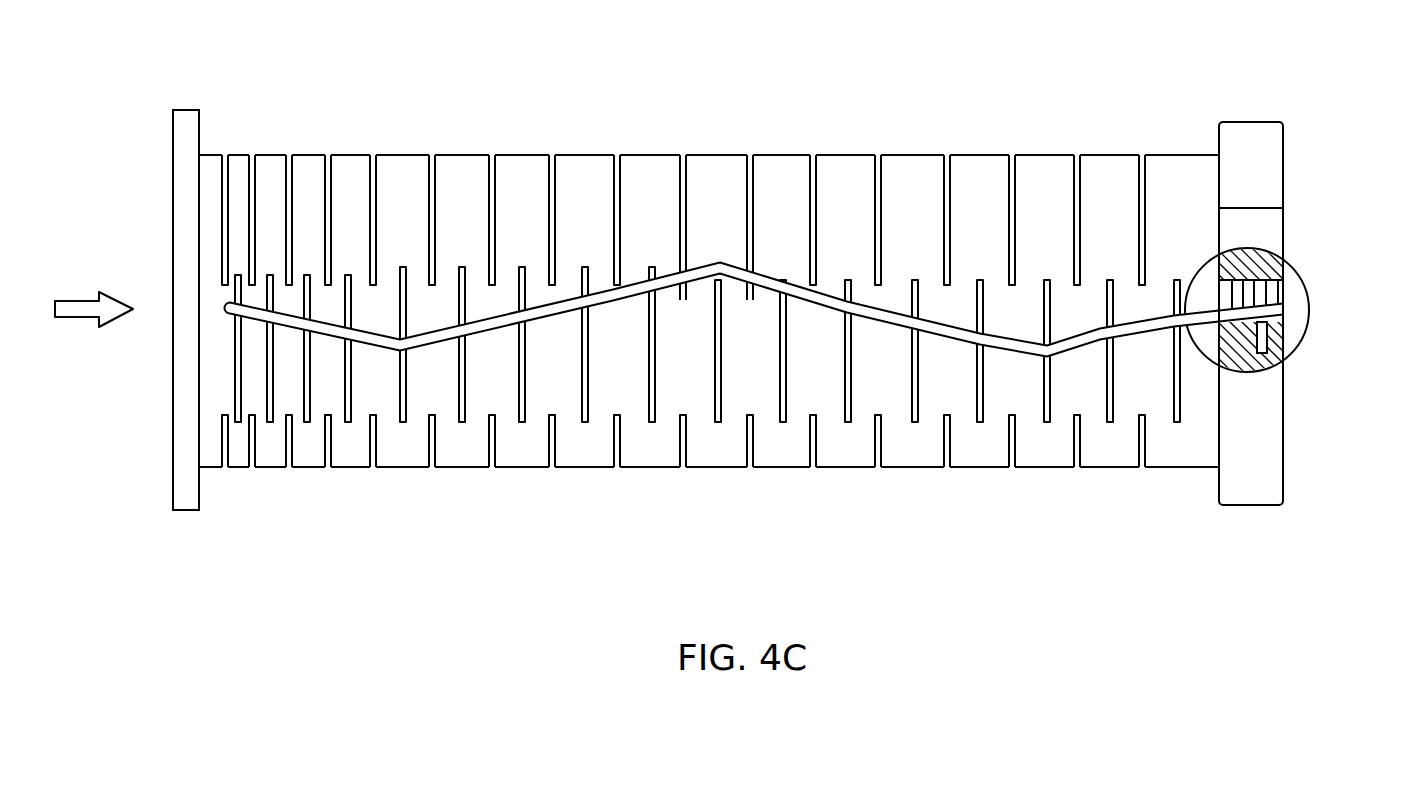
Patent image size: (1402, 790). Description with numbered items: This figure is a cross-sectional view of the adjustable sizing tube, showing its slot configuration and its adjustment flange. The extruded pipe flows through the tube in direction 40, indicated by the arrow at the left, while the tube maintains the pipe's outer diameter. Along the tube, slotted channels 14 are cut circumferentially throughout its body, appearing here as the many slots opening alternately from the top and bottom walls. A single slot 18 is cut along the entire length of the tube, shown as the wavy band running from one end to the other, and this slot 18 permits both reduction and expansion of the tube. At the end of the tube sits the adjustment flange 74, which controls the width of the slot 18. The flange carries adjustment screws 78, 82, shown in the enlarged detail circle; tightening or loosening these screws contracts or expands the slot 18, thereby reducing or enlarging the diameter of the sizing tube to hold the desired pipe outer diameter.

The slotted channels 14 is at (377, 173).
The slot 18 is at (603, 288).
The direction 40 is at (66, 318).
The adjustment flange 74 is at (1256, 119).
The adjustment screw 78 is at (1298, 357).
The adjustment screw 82 is at (1245, 310).